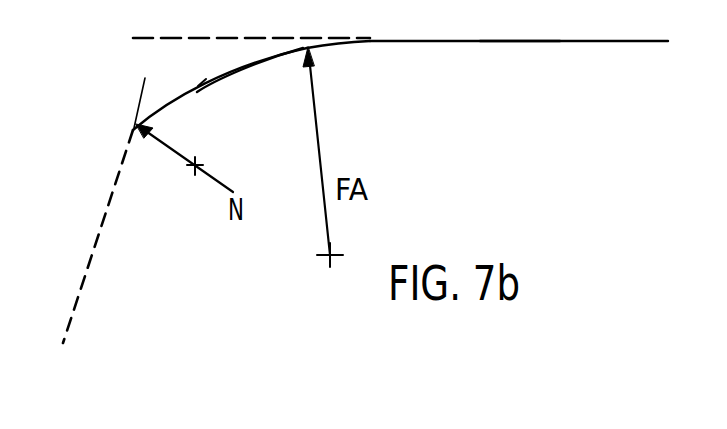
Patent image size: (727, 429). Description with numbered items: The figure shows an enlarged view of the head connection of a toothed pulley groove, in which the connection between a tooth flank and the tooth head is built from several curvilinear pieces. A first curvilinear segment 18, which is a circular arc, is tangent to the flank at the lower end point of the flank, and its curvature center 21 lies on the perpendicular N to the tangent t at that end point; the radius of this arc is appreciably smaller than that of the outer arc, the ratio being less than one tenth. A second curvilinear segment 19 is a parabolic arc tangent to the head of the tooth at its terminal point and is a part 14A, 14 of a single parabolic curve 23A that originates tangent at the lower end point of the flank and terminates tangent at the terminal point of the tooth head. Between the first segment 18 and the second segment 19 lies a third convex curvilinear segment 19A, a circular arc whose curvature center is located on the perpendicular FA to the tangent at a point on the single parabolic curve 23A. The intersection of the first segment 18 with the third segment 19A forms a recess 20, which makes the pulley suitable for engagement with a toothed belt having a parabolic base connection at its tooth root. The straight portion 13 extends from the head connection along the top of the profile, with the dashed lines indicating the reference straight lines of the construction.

The straight surface portion 13 is at (612, 42).
The part of the parabolic arc 14 is at (525, 42).
The part of the parabolic arc 14A is at (320, 51).
The first curvilinear segment 18 is at (143, 134).
The second curvilinear segment 19 is at (377, 43).
The third convex curvilinear segment 19A is at (257, 63).
The recess 20 is at (195, 92).
The curvature center 21 is at (193, 182).
The single parabolic curve 23A is at (197, 92).